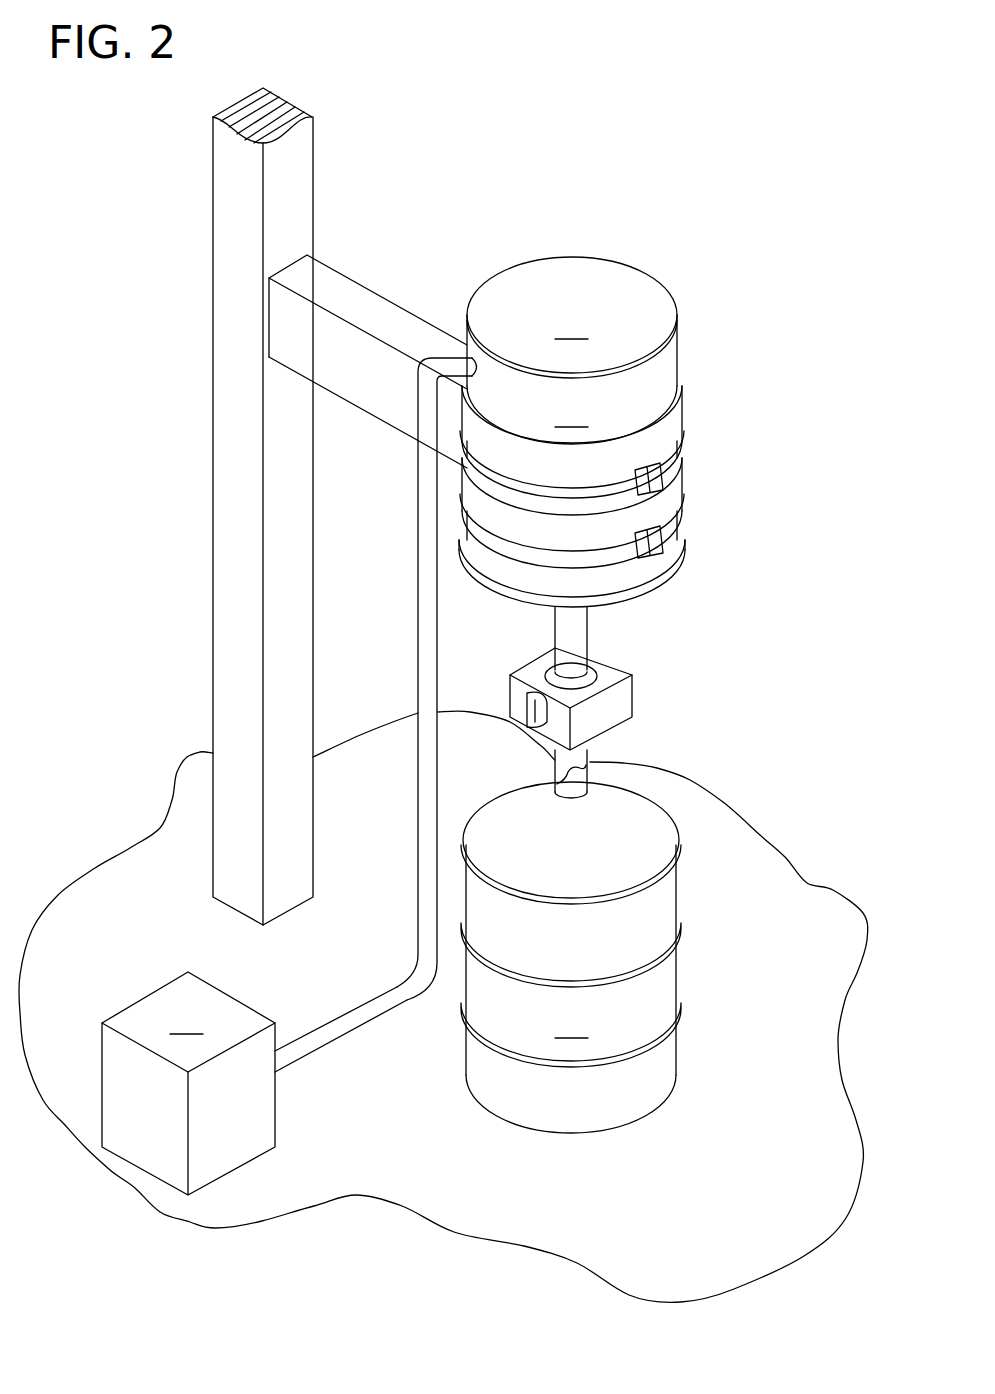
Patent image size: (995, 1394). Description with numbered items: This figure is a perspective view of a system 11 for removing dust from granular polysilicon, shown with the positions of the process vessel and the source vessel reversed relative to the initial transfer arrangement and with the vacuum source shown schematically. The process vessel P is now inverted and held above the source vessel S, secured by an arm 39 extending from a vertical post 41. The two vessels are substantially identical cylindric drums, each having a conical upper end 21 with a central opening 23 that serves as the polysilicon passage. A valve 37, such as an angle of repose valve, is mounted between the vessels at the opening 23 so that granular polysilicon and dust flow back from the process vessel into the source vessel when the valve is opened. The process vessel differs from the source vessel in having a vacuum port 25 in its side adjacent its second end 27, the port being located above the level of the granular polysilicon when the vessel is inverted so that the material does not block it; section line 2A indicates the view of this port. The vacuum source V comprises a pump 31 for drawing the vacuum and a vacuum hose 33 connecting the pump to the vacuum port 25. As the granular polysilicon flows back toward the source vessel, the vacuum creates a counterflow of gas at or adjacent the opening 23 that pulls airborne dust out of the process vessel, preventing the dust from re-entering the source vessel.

The system for removing dust from granular polysilicon 11 is at (728, 207).
The conical upper end 21 is at (663, 843).
The central opening 23 is at (588, 773).
The vacuum port 25 is at (470, 350).
The second end 27 is at (680, 313).
The pump 31 is at (243, 1155).
The vacuum hose 33 is at (418, 626).
The valve 37 is at (625, 708).
The arm 39 is at (334, 287).
The vertical post 41 is at (232, 415).
The section line 2A is at (711, 273).